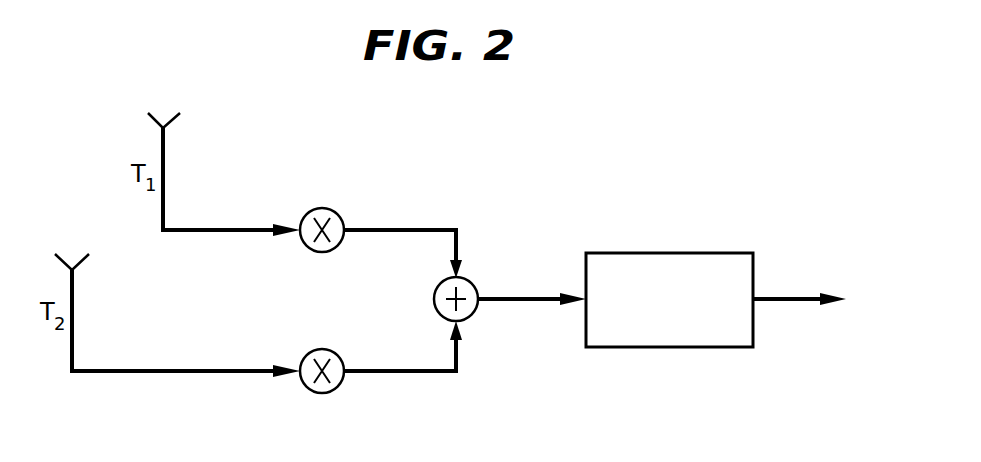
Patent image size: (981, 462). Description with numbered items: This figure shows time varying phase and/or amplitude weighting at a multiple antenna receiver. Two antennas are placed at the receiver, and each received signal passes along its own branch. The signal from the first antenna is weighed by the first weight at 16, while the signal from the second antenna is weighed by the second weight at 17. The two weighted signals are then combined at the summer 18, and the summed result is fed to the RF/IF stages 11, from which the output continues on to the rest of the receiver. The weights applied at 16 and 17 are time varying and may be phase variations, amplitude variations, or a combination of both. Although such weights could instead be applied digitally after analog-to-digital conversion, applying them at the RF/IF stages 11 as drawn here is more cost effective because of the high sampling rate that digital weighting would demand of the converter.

The RF/IF stages 11 is at (720, 253).
The weighting by w1(t) 16 is at (339, 214).
The weighting by w2(t) 17 is at (339, 355).
The summer 18 is at (472, 282).